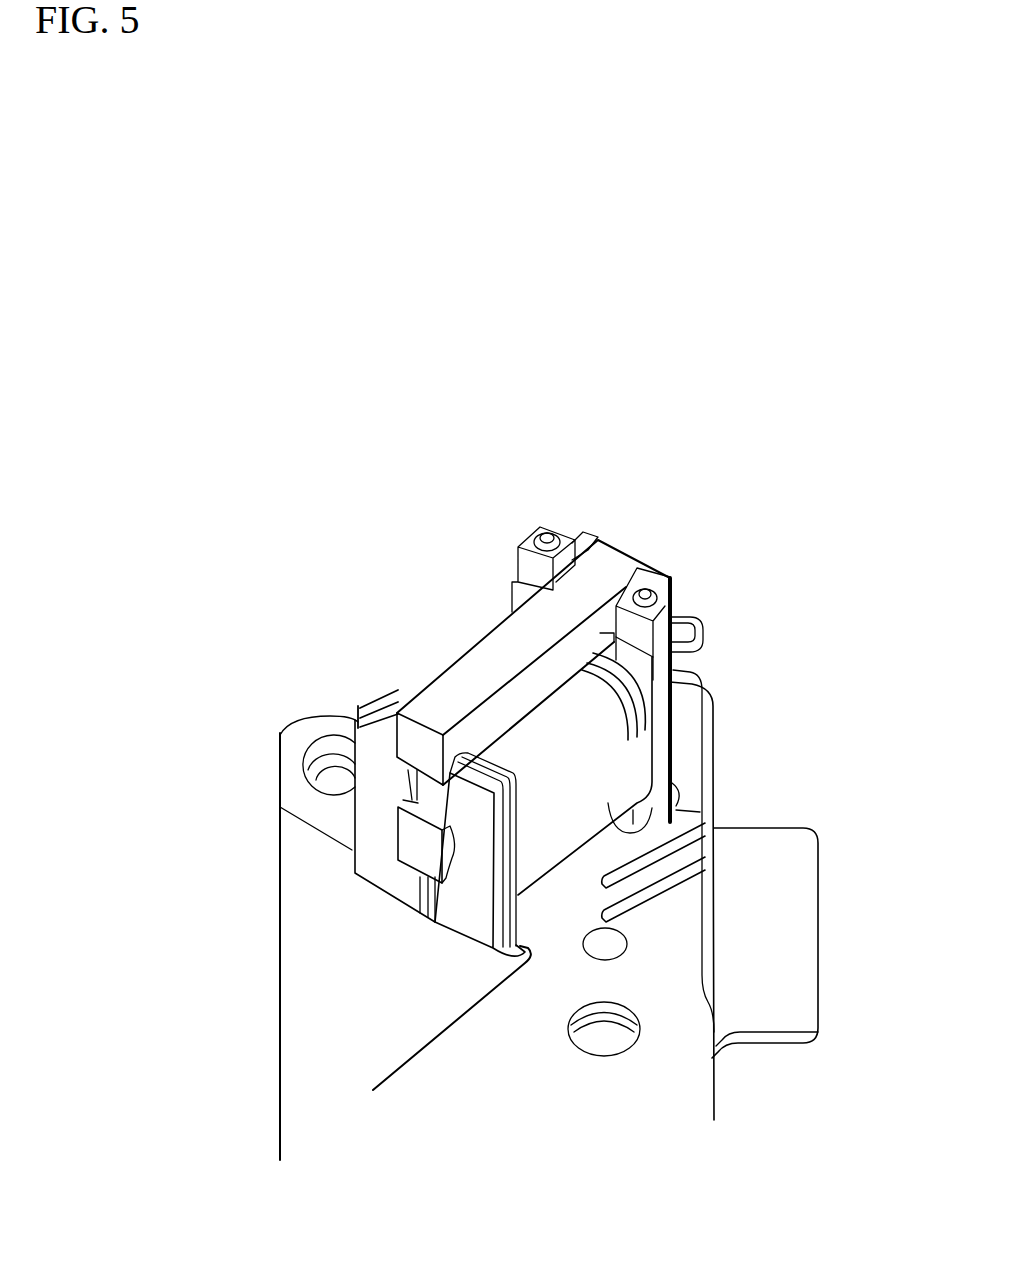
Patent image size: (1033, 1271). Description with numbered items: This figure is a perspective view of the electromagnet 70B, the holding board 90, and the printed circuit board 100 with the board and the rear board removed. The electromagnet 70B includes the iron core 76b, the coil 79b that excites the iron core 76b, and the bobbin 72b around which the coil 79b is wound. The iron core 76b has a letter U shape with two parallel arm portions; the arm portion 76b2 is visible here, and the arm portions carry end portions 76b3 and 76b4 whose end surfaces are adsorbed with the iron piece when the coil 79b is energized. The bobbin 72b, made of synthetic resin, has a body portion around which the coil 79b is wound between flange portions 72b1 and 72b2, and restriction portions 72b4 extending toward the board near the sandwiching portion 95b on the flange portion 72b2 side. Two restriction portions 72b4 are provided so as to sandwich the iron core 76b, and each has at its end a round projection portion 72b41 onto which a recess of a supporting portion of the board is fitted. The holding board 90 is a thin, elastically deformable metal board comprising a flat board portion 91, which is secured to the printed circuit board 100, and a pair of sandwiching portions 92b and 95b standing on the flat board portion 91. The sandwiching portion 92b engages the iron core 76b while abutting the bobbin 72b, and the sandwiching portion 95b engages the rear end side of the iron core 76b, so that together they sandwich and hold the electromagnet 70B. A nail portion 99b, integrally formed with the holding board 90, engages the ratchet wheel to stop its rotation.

The electromagnet 70B is at (624, 506).
The bobbin 72b is at (666, 816).
The flange portion 72b1 is at (373, 707).
The flange portion 72b2 is at (665, 671).
The restriction portions 72b4 is at (518, 547).
The projection portion 72b41 is at (540, 533).
The iron core 76b is at (448, 650).
The arm portion 76b2 is at (497, 643).
The end portion 76b3 is at (413, 845).
The end portion 76b4 is at (417, 735).
The coil 79b is at (597, 727).
The holding board 90 is at (388, 1066).
The flat board portion 91 is at (493, 1053).
The sandwiching portion 92b is at (377, 850).
The sandwiching portion 95b is at (565, 527).
The nail portion 99b is at (682, 852).
The printed circuit board 100 is at (272, 1006).